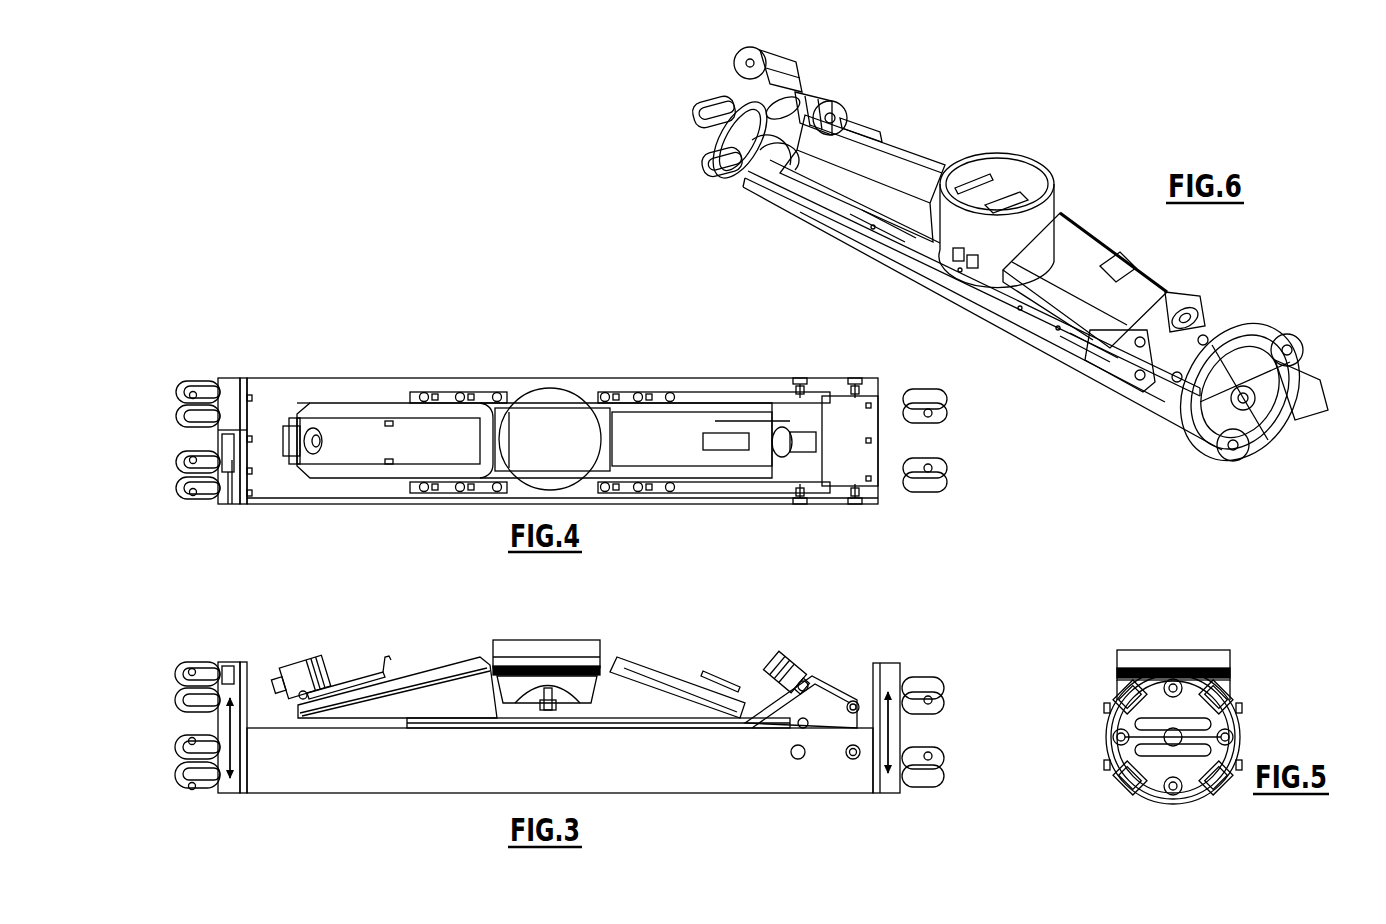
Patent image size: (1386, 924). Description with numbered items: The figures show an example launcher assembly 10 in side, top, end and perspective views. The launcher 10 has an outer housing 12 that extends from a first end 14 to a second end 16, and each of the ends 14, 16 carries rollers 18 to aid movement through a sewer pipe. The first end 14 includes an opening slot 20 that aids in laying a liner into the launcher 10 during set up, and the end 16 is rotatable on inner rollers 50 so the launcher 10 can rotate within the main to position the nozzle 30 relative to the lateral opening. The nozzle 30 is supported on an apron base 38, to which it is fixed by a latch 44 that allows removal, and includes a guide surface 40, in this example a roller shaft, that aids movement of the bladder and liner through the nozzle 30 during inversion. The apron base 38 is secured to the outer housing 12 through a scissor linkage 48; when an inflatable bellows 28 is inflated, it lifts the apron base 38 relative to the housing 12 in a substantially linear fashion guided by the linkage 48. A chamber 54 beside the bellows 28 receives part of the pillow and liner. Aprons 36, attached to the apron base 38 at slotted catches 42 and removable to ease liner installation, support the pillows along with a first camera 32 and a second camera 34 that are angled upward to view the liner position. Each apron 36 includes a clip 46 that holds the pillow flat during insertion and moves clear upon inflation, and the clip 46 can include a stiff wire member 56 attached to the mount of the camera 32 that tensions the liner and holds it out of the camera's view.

In FIG. 4, the launcher assembly 10 is at (335, 330).
In FIG. 3, the launcher assembly 10 is at (335, 805).
In FIG. 5, the launcher assembly 10 is at (1270, 646).
In FIG. 6, the launcher assembly 10 is at (747, 212).
In FIG. 4, the outer housing 12 is at (360, 378).
In FIG. 3, the outer housing 12 is at (560, 760).
In FIG. 6, the outer housing 12 is at (982, 310).
In FIG. 3, the first end 14 is at (232, 782).
In FIG. 3, the second end 16 is at (894, 784).
In FIG. 5, the second end 16 is at (1241, 742).
In FIG. 4, the rollers 18 is at (176, 410).
In FIG. 3, the rollers 18 is at (175, 674).
In FIG. 5, the rollers 18 is at (1136, 684).
In FIG. 6, the rollers 18 is at (736, 52).
In FIG. 4, the opening slot 20 is at (214, 440).
In FIG. 3, the opening slot 20 is at (236, 662).
In FIG. 6, the opening slot 20 is at (777, 78).
In FIG. 6, the inflatable bellows 28 is at (1047, 318).
In FIG. 4, the nozzle 30 is at (556, 420).
In FIG. 3, the nozzle 30 is at (592, 642).
In FIG. 5, the nozzle 30 is at (1196, 652).
In FIG. 6, the nozzle 30 is at (1016, 200).
In FIG. 4, the first camera 32 is at (296, 418).
In FIG. 3, the first camera 32 is at (293, 660).
In FIG. 6, the first camera 32 is at (834, 92).
In FIG. 4, the second camera 34 is at (787, 428).
In FIG. 3, the second camera 34 is at (800, 665).
In FIG. 6, the second camera 34 is at (1184, 298).
In FIG. 4, the aprons 36 is at (405, 428).
In FIG. 3, the aprons 36 is at (398, 712).
In FIG. 6, the aprons 36 is at (913, 160).
In FIG. 4, the apron base 38 is at (515, 402).
In FIG. 3, the apron base 38 is at (462, 724).
In FIG. 4, the guide surface 40 is at (508, 482).
In FIG. 6, the guide surface 40 is at (986, 176).
In FIG. 4, the slotted catches 42 is at (462, 391).
In FIG. 6, the slotted catches 42 is at (878, 236).
In FIG. 3, the latch 44 is at (562, 712).
In FIG. 6, the latch 44 is at (952, 265).
In FIG. 4, the clip 46 is at (736, 450).
In FIG. 3, the clip 46 is at (722, 680).
In FIG. 6, the clip 46 is at (1121, 274).
In FIG. 4, the scissor linkage 48 is at (831, 384).
In FIG. 3, the scissor linkage 48 is at (830, 698).
In FIG. 6, the scissor linkage 48 is at (1152, 386).
In FIG. 4, the inner rollers 50 is at (230, 494).
In FIG. 5, the inner rollers 50 is at (1121, 762).
In FIG. 6, the inner rollers 50 is at (732, 178).
In FIG. 4, the chamber 54 is at (708, 383).
In FIG. 6, the chamber 54 is at (822, 206).
In FIG. 4, the stiff wire member 56 is at (355, 457).
In FIG. 3, the stiff wire member 56 is at (346, 684).
In FIG. 6, the stiff wire member 56 is at (881, 134).